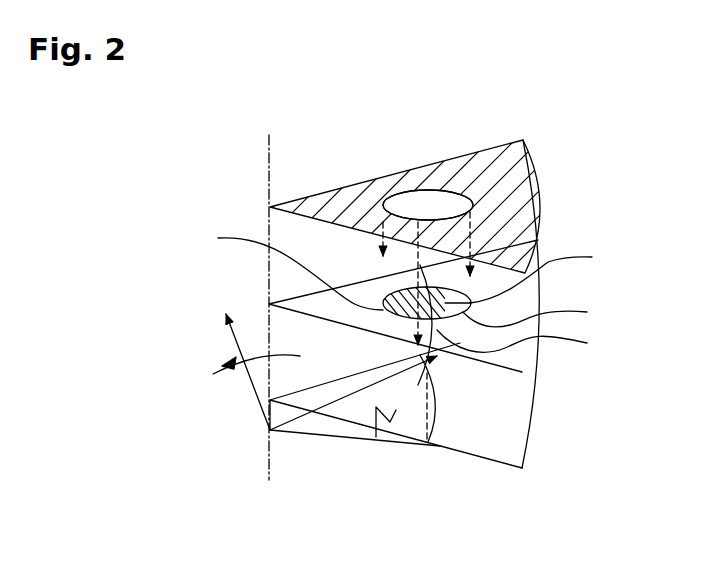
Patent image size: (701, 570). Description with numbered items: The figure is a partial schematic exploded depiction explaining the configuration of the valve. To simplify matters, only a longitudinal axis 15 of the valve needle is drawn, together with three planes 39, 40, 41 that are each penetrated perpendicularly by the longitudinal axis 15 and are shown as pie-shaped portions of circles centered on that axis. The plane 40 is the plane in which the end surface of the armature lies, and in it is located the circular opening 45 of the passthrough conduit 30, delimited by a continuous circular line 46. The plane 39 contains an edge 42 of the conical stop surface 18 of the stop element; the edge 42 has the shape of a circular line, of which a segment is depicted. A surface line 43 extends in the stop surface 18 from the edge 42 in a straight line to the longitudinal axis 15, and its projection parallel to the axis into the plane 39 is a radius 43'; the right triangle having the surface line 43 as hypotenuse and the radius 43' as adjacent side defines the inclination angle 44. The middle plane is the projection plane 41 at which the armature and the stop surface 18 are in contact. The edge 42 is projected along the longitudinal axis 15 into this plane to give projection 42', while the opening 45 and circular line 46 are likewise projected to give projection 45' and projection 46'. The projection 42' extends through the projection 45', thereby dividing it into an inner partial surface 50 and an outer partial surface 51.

The longitudinal axis 15 is at (268, 176).
The stop surface 18 is at (376, 437).
The passthrough conduit 30 is at (413, 208).
The plane 39 is at (521, 413).
The plane 40 is at (521, 192).
The projection plane 41 is at (522, 302).
The edge 42 is at (470, 441).
The projection of edge 42' is at (525, 325).
The surface line 43 is at (358, 362).
The radius 43' is at (353, 382).
The inclination angle 44 is at (258, 345).
The opening 45 is at (428, 158).
The projection of opening 45' is at (391, 278).
The circular line 46 is at (426, 220).
The projection of circular line 46' is at (547, 319).
The inner partial surface 50 is at (286, 268).
The outer partial surface 51 is at (571, 275).